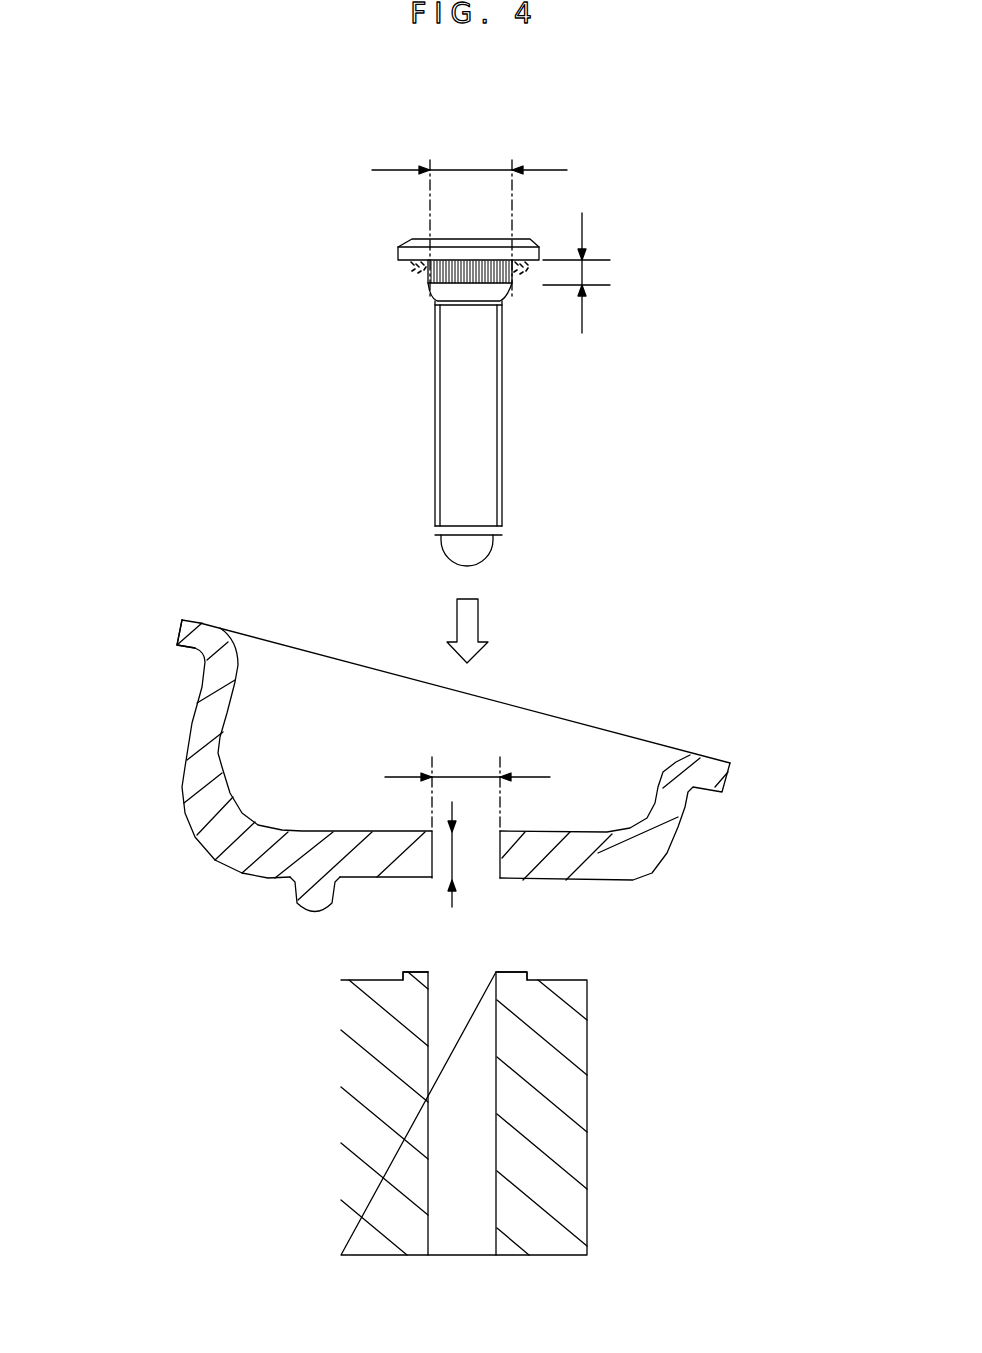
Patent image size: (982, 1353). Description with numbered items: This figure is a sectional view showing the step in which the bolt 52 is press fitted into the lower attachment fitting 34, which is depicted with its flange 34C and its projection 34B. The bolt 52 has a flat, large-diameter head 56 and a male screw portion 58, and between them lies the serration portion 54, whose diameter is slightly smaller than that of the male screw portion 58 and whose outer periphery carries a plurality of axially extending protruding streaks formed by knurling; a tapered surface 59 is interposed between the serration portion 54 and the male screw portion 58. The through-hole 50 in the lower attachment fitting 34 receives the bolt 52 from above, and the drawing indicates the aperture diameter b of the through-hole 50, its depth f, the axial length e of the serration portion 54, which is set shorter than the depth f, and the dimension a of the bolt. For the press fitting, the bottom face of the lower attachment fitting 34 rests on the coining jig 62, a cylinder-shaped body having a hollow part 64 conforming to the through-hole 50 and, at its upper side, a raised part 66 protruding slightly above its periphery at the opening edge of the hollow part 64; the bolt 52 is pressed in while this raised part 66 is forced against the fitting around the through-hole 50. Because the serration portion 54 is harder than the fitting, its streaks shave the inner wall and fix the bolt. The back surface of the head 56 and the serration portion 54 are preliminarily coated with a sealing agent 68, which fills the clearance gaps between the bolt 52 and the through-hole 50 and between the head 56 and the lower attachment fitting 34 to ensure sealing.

The bolt 52 is at (362, 353).
The head 56 is at (417, 238).
The serration portion 54 is at (460, 272).
The sealing agent 68 is at (415, 263).
The tapered surface 59 is at (447, 290).
The male screw portion 58 is at (458, 468).
The lower attachment fitting 34 is at (688, 823).
The flange 34C is at (193, 715).
The projection 34B is at (385, 880).
The through-hole 50 is at (497, 857).
The coining jig 62 is at (588, 1115).
The raised part 66 is at (513, 968).
The hollow part 64 is at (495, 1185).
The dimension a is at (473, 160).
The aperture diameter of the through-hole b is at (460, 773).
The axial length of the serration portion e is at (585, 272).
The depth of the through-hole f is at (455, 853).